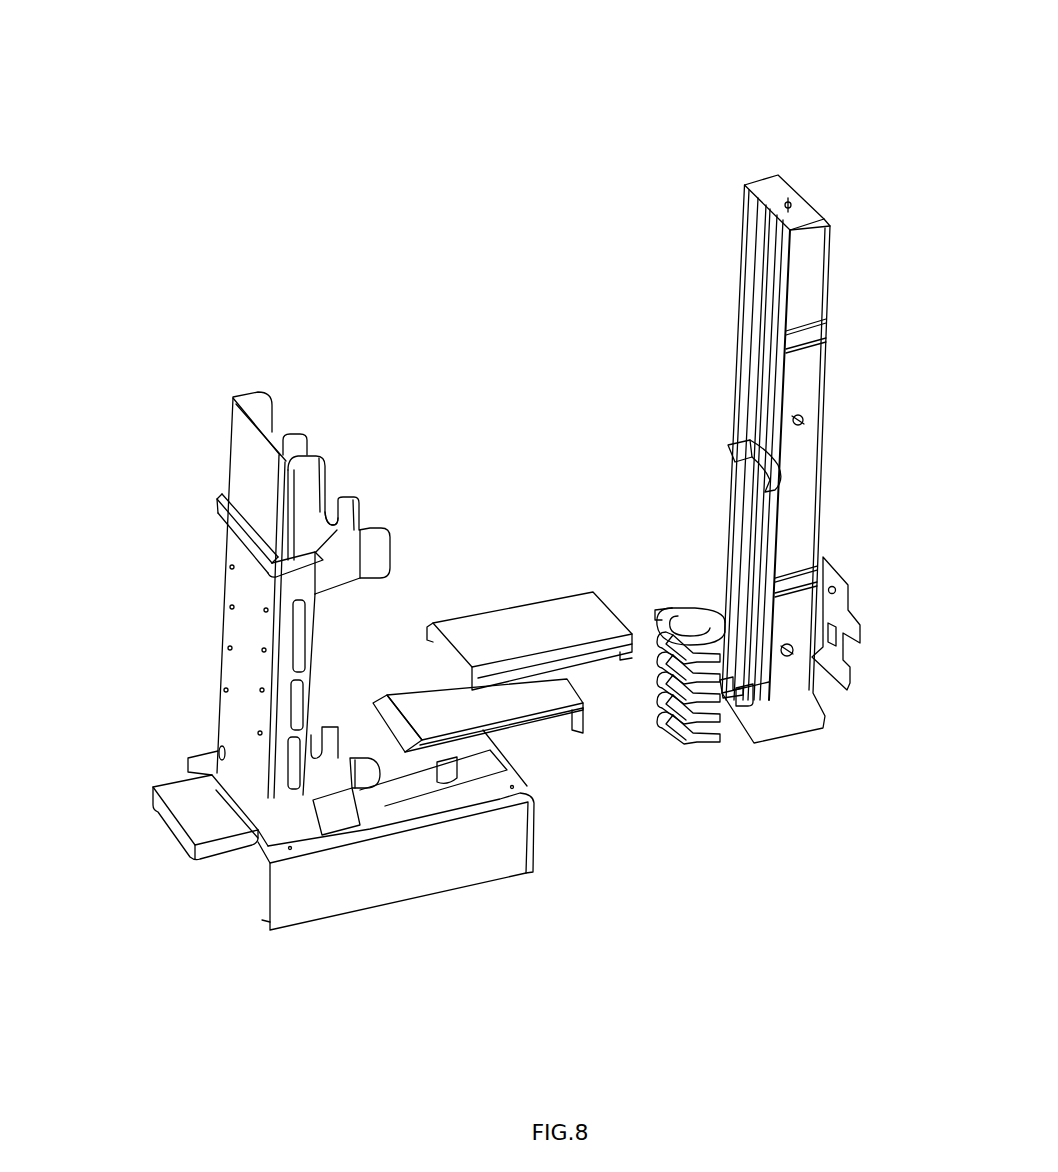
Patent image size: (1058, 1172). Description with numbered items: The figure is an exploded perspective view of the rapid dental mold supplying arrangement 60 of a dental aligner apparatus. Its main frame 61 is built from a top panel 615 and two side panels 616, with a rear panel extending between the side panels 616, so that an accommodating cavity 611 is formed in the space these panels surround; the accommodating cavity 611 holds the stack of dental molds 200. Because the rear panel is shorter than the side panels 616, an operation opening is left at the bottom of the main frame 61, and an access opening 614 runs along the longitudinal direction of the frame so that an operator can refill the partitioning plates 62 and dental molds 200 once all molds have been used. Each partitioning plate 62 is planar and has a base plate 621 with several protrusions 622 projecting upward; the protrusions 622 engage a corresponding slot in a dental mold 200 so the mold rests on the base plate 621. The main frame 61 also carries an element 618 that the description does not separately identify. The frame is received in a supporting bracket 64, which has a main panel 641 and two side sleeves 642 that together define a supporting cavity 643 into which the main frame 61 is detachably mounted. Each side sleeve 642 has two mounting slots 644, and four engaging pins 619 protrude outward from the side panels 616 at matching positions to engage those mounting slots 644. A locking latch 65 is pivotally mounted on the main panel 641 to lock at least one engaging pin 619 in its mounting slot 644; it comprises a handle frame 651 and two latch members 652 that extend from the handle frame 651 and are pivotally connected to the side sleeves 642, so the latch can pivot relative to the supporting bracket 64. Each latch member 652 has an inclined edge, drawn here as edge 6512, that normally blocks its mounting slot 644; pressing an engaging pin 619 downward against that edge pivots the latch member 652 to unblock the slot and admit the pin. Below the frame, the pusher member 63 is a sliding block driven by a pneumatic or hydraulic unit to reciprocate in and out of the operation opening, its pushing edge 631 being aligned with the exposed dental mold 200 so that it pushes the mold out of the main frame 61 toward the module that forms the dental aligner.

The rapid dental mold supplying arrangement 60 is at (202, 170).
The main frame 61 is at (815, 452).
The accommodating cavity 611 is at (757, 342).
The access opening 614 is at (722, 545).
The top panel 615 is at (805, 205).
The side panels 616 is at (758, 253).
The channel 618 is at (750, 405).
The engaging pins 619 is at (828, 320).
The partitioning plates 62 is at (747, 473).
The base plate 621 is at (783, 492).
The protrusions 622 is at (790, 428).
The pusher member 63 is at (528, 695).
The pushing edge 631 is at (403, 748).
The supporting bracket 64 is at (301, 555).
The main panel 641 is at (253, 610).
The side sleeves 642 is at (260, 407).
The supporting cavity 643 is at (313, 422).
The mounting slots 644 is at (320, 735).
The locking latch 65 is at (191, 573).
The handle frame 651 is at (227, 530).
The hook 6512 is at (312, 506).
The latch members 652 is at (395, 543).
The dental molds 200 is at (693, 610).